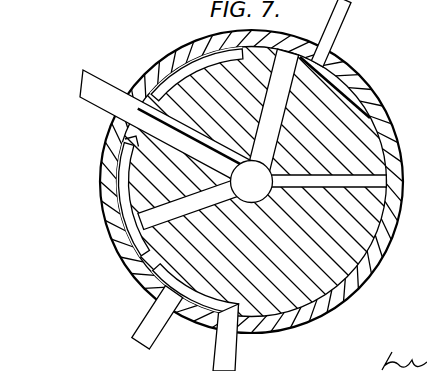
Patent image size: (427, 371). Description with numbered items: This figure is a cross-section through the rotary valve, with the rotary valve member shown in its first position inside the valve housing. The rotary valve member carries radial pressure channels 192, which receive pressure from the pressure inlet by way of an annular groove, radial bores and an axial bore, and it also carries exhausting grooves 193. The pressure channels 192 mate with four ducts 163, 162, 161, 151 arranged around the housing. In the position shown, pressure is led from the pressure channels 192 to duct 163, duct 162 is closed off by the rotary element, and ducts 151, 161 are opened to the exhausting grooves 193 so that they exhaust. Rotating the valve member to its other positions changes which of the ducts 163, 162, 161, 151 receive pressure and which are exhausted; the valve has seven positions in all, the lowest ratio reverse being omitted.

The duct 151 is at (232, 352).
The duct 161 is at (153, 328).
The duct 162 is at (332, 19).
The duct 163 is at (109, 88).
The pressure channels 192 is at (132, 189).
The exhausting grooves 193 is at (173, 278).